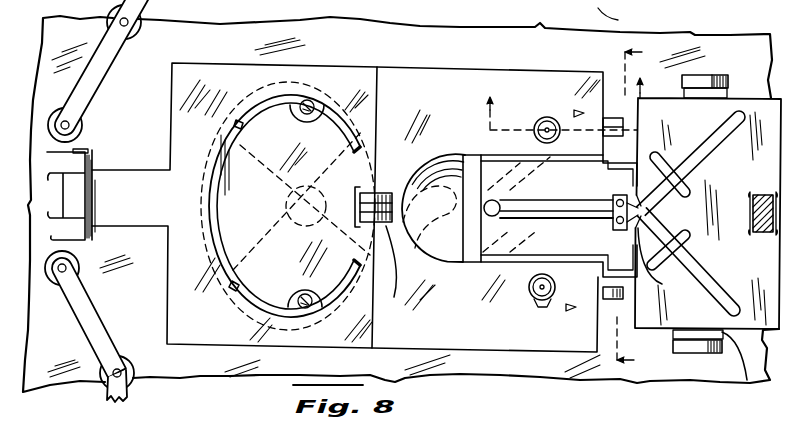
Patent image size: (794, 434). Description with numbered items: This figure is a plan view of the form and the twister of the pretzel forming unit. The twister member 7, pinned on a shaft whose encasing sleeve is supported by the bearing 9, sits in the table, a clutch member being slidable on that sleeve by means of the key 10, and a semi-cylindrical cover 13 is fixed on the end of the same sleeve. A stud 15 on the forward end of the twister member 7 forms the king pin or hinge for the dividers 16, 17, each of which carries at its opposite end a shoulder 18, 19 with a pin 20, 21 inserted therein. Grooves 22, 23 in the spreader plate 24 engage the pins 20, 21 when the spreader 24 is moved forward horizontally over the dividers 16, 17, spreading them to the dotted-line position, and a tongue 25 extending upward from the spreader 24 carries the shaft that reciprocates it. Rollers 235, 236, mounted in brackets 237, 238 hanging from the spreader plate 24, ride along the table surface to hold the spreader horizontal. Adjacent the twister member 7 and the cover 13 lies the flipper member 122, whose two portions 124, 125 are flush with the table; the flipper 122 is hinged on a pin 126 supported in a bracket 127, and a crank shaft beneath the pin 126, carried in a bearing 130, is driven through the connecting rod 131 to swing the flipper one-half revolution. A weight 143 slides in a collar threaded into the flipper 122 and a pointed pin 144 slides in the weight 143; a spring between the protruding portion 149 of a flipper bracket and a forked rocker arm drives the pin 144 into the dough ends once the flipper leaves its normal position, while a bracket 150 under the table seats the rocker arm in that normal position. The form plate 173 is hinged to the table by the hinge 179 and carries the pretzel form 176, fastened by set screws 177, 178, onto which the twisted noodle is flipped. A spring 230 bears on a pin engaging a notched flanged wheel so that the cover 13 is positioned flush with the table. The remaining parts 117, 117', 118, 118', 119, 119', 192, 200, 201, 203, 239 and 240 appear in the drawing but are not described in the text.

The twister member 7 is at (528, 237).
The bearing 9 is at (563, 93).
The key 10 is at (643, 208).
The semi-cylindrical cover 13 is at (492, 258).
The stud 15 is at (465, 232).
The divider 16 is at (547, 202).
The divider 17 is at (555, 219).
The shoulder 18 is at (641, 196).
The shoulder 19 is at (662, 263).
The pin 20 is at (617, 201).
The pin 21 is at (618, 224).
The groove 22 is at (705, 152).
The groove 23 is at (715, 293).
The spreader 24 is at (669, 211).
The tongue 25 is at (756, 233).
The lower link 117 is at (105, 330).
The upper link 117' is at (108, 67).
The lower link pivot 118 is at (143, 372).
The upper link pivot 118' is at (150, 19).
The lower link pin 119 is at (94, 276).
The upper link pin 119' is at (98, 120).
The flipper 122 is at (490, 111).
The portion 124 is at (527, 328).
The portion 125 is at (517, 100).
The hinge pin 126 is at (382, 190).
The bracket 127 is at (398, 273).
The bearing 130 is at (628, 6).
The connecting rod 131 is at (521, 5).
The weight 143 is at (545, 118).
The pin 144 is at (558, 120).
The protruding portion 149 is at (606, 294).
The bracket 150 is at (620, 302).
The form plate 173 is at (223, 332).
The pretzel form 176 is at (257, 97).
The set screw 177 is at (310, 102).
The set screw 178 is at (308, 308).
The hinge 179 is at (80, 152).
The element 192 is at (578, 12).
The element 200 is at (681, 5).
The element 201 is at (631, 17).
The element 203 is at (720, 17).
The spring 230 is at (438, 5).
The roller 235 is at (703, 353).
The roller 236 is at (715, 76).
The bracket 237 is at (747, 369).
The bracket 238 is at (728, 96).
The lower track stop 239 is at (233, 282).
The upper track stop 240 is at (229, 154).